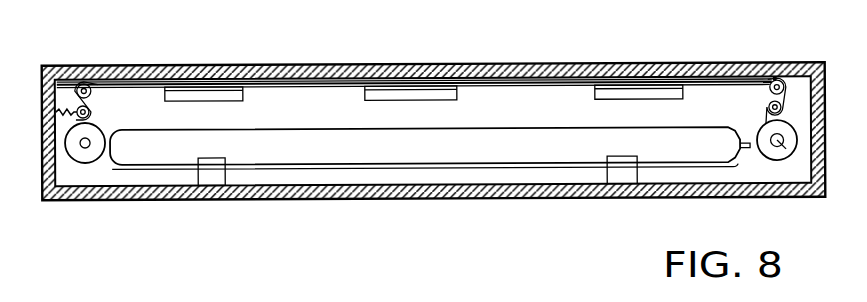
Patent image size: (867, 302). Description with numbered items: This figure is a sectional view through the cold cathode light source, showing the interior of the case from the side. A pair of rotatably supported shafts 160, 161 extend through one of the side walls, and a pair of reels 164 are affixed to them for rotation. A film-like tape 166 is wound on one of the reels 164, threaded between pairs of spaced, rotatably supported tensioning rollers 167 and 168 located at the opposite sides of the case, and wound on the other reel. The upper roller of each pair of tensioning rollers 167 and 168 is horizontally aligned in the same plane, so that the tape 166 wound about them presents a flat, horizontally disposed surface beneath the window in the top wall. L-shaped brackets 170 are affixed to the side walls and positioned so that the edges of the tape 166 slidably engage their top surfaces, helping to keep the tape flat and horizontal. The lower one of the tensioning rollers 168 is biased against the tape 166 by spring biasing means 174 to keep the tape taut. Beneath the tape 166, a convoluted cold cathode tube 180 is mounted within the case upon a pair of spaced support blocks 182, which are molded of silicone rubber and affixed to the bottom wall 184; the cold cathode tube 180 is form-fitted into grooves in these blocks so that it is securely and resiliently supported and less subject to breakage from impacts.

The shaft 160 is at (84, 148).
The shaft 161 is at (784, 153).
The reels 164 is at (95, 152).
The film-like tape 166 is at (97, 111).
The tensioning rollers 167 is at (785, 108).
The tensioning rollers 168 is at (84, 86).
The L-shaped brackets 170 is at (247, 96).
The spring biasing means 174 is at (67, 108).
The cold cathode tube 180 is at (351, 128).
The support blocks 182 is at (212, 174).
The bottom wall 184 is at (447, 198).